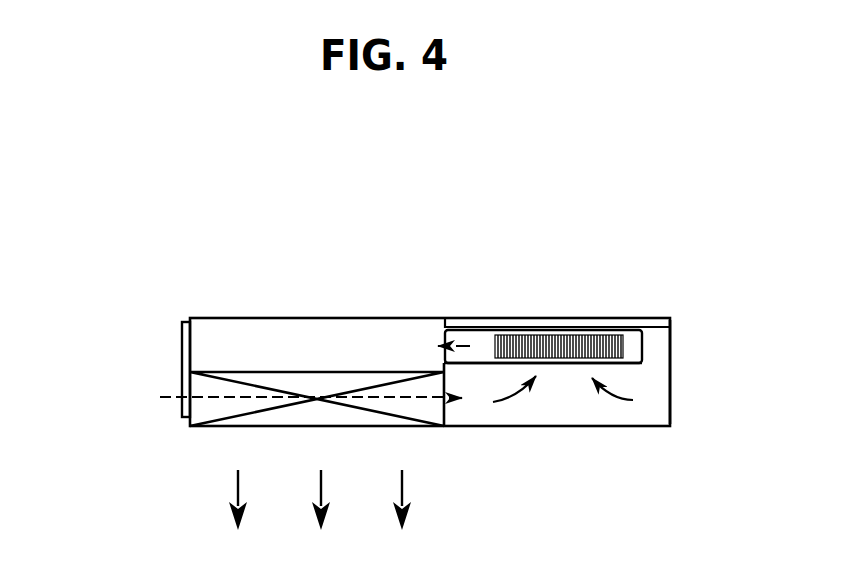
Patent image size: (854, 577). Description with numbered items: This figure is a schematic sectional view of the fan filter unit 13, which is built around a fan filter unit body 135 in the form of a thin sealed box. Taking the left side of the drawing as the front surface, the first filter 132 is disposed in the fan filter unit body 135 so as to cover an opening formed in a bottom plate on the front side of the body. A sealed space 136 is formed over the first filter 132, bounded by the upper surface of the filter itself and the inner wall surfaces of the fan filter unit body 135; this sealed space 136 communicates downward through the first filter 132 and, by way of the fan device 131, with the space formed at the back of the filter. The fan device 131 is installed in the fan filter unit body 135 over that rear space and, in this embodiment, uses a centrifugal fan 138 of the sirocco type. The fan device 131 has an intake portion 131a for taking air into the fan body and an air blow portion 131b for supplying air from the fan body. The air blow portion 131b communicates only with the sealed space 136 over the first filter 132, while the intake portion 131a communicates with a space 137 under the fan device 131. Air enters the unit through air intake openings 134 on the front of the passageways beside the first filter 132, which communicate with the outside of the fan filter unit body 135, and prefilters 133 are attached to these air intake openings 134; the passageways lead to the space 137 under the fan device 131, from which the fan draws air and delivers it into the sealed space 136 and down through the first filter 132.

The fan filter unit 13 is at (585, 312).
The fan device 131 is at (643, 348).
The intake portion 131a is at (565, 368).
The air blow portion 131b is at (434, 318).
The first filter 132 is at (218, 383).
The prefilter 133 is at (182, 414).
The air intake opening 134 is at (182, 350).
The fan filter unit body 135 is at (672, 405).
The sealed space 136 is at (382, 337).
The space under the fan device 137 is at (573, 413).
The centrifugal fan 138 is at (597, 335).